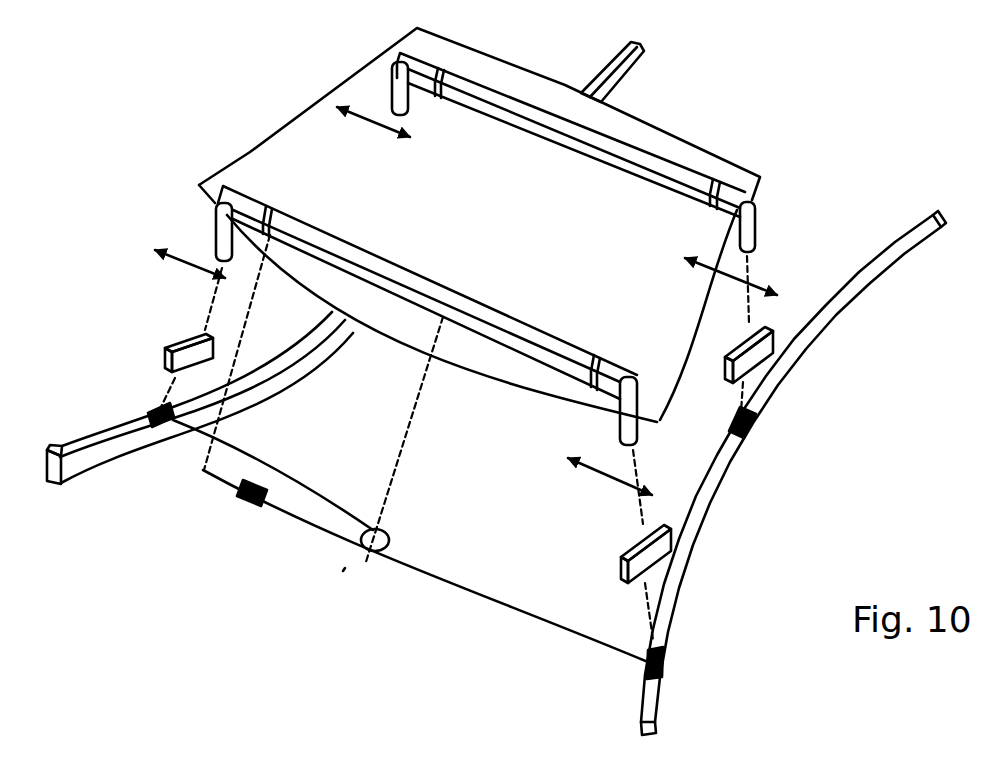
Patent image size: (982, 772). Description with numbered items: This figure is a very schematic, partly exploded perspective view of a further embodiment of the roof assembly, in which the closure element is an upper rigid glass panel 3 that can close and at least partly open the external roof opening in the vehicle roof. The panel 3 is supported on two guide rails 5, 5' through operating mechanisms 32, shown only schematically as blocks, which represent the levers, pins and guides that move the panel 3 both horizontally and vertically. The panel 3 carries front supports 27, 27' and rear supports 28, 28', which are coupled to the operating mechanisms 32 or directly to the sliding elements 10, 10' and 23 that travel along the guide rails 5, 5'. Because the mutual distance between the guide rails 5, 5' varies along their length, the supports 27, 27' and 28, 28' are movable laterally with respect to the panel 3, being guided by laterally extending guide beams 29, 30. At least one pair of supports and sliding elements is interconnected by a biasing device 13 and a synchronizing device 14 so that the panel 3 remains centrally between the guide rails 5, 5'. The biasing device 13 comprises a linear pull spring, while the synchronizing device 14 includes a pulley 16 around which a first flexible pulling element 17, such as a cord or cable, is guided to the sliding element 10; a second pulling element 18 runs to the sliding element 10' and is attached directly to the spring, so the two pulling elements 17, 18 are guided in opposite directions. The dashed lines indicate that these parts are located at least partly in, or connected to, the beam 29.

The upper rigid glass panel 3 is at (516, 238).
The guide rail 5 is at (793, 473).
The guide rail 5' is at (191, 398).
The sliding element 10 is at (693, 651).
The sliding element 10' is at (131, 394).
The biasing device 13 is at (257, 532).
The synchronizing device 14 is at (343, 570).
The pulley 16 is at (383, 535).
The first flexible pulling element 17 is at (282, 473).
The second pulling element 18 is at (481, 592).
The sliding element 23 is at (766, 410).
The front support 27 is at (675, 456).
The front support 27' is at (167, 240).
The rear support 28 is at (809, 256).
The rear support 28' is at (340, 98).
The guide beam 29 is at (543, 356).
The guide beam 30 is at (682, 175).
The operating mechanism 32 is at (172, 343).